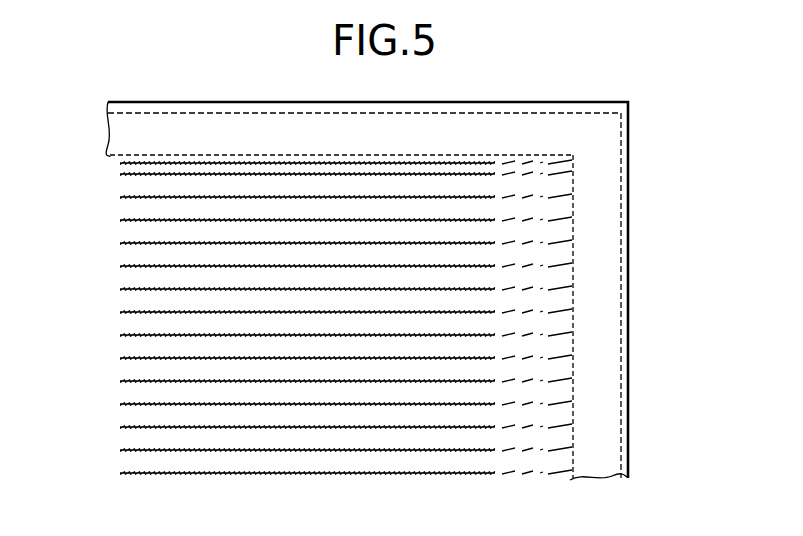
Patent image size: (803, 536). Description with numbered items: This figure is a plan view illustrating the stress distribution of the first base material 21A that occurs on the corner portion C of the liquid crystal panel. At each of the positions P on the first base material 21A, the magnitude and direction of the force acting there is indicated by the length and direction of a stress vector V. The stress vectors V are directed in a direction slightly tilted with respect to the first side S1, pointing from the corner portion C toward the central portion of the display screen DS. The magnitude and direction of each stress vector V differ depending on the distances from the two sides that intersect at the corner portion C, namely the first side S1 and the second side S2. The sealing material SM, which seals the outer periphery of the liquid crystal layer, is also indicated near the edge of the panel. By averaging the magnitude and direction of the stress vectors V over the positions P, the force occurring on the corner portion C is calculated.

The corner portion C is at (630, 163).
The first base material 21A is at (628, 385).
The first side S1 is at (311, 155).
The second side S2 is at (566, 331).
The sealing material SM is at (604, 465).
The display screen DS is at (468, 192).
The positions P is at (160, 219).
The stress vector V is at (162, 218).